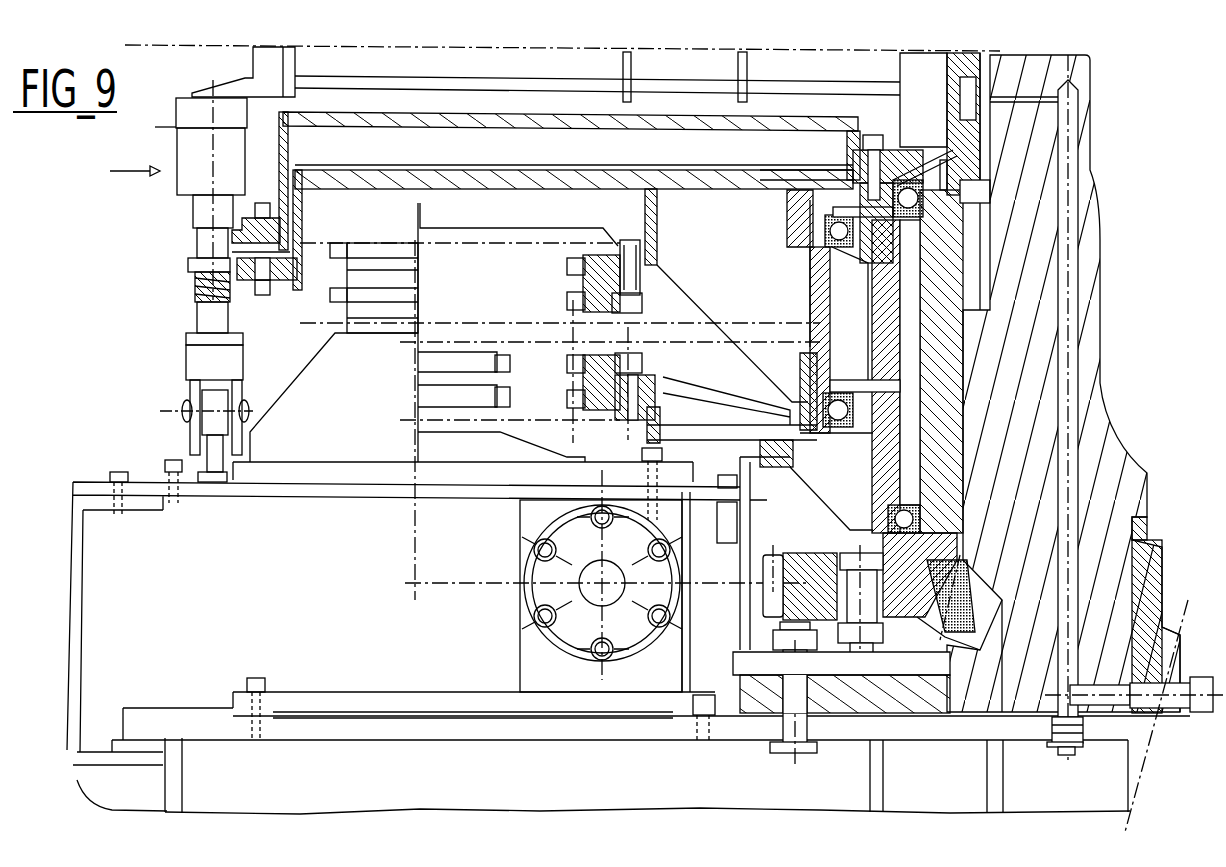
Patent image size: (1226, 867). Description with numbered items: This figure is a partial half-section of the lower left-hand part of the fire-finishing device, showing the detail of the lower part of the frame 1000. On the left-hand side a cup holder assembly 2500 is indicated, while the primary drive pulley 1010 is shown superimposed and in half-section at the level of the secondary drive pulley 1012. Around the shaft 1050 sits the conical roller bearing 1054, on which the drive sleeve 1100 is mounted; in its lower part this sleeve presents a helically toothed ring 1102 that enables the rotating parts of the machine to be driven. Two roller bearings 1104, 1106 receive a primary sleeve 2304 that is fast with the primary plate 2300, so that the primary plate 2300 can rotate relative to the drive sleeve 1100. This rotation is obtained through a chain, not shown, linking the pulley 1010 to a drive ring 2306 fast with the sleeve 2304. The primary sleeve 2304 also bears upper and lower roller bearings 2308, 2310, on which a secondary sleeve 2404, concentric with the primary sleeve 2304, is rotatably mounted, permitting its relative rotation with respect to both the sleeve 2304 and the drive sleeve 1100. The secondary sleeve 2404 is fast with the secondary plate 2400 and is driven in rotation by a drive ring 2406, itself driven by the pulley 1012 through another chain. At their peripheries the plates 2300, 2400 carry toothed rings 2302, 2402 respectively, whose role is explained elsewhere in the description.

The base plate 1000 is at (303, 725).
The primary drive pulley 1010 is at (453, 397).
The secondary drive pulley 1012 is at (333, 300).
The shaft 1050 is at (1042, 435).
The conical roller bearing 1054 is at (985, 600).
The drive sleeve 1100 is at (853, 410).
The helically toothed ring 1102 is at (771, 590).
The roller bearing 1104 is at (897, 513).
The roller bearing 1106 is at (987, 165).
The primary plate 2300 is at (403, 122).
The toothed ring 2302 is at (232, 240).
The primary sleeve 2304 is at (890, 302).
The drive ring 2306 is at (570, 405).
The upper roller bearing 2308 is at (985, 165).
The lower roller bearing 2310 is at (950, 432).
The secondary plate 2400 is at (230, 198).
The toothed ring 2402 is at (197, 273).
The secondary sleeve 2404 is at (838, 302).
The drive ring 2406 is at (573, 266).
The cup holder assembly 2500 is at (105, 165).